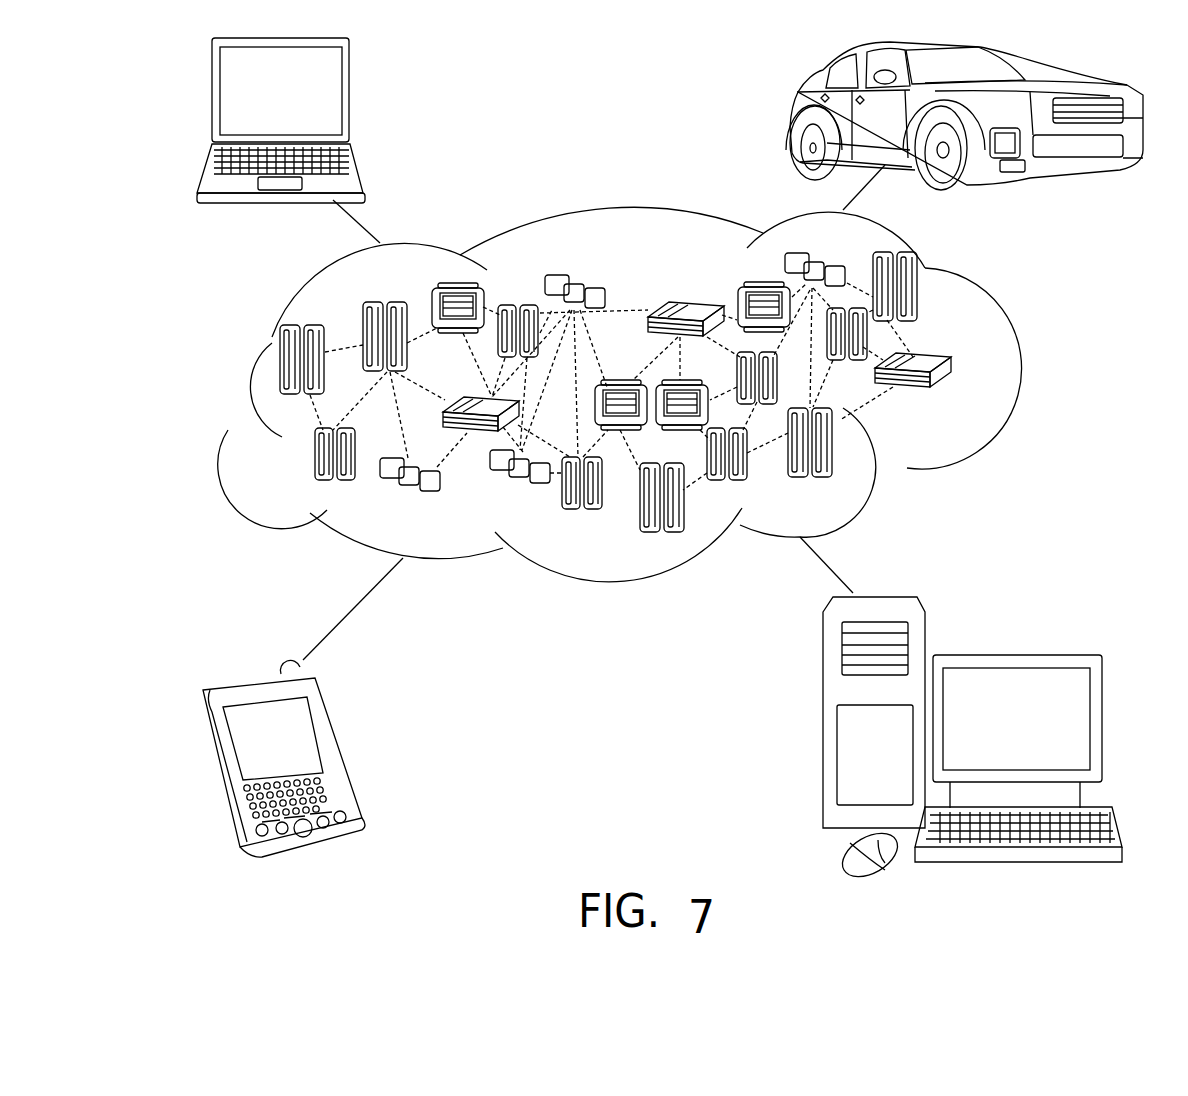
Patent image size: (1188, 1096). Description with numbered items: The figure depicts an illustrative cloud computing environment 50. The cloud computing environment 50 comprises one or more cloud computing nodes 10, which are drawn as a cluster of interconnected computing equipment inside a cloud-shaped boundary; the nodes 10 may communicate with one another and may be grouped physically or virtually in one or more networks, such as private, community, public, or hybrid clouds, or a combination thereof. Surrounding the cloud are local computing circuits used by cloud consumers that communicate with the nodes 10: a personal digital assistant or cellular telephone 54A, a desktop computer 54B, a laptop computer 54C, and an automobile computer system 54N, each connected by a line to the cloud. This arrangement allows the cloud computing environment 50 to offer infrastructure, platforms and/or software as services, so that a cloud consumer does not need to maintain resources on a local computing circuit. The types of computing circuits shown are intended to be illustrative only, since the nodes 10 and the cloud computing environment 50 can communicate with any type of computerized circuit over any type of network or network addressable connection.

The laptop computer 54C is at (350, 102).
The automobile computer system 54N is at (795, 115).
The personal digital assistant (PDA) or cellular telephone 54A is at (340, 748).
The desktop computer 54B is at (1012, 655).
The cloud computing environment 50 is at (1018, 365).
The cloud computing nodes 10 is at (955, 398).